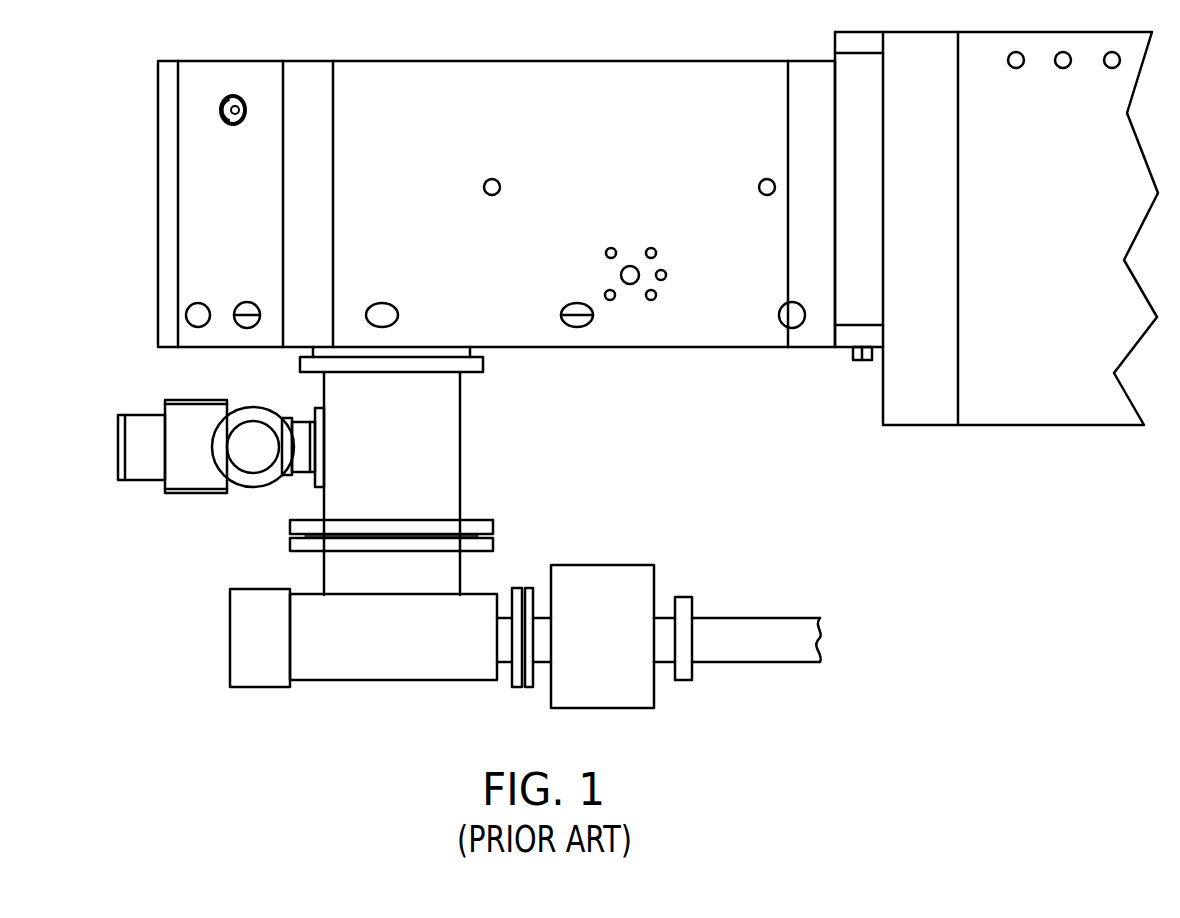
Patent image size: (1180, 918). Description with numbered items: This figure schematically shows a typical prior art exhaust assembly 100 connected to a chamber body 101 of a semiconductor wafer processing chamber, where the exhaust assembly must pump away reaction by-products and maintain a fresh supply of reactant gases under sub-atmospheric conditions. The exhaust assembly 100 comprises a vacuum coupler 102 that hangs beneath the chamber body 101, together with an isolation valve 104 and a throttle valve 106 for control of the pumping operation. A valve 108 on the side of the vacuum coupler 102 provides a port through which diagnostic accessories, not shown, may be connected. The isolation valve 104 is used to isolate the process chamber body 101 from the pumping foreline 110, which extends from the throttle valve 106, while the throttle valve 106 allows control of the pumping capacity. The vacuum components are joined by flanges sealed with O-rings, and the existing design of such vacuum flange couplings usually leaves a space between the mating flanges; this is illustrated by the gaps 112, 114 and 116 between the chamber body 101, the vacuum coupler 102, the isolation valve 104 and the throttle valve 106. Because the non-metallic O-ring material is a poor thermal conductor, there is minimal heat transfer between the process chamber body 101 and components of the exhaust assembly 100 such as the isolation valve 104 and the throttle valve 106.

The exhaust assembly 100 is at (182, 573).
The chamber body 101 is at (557, 60).
The vacuum coupler 102 is at (452, 433).
The isolation valve 104 is at (350, 683).
The throttle valve 106 is at (643, 698).
The valve 108 is at (165, 410).
The pumping foreline 110 is at (780, 657).
The gap 112 is at (483, 357).
The gap 114 is at (493, 532).
The gap 116 is at (513, 687).